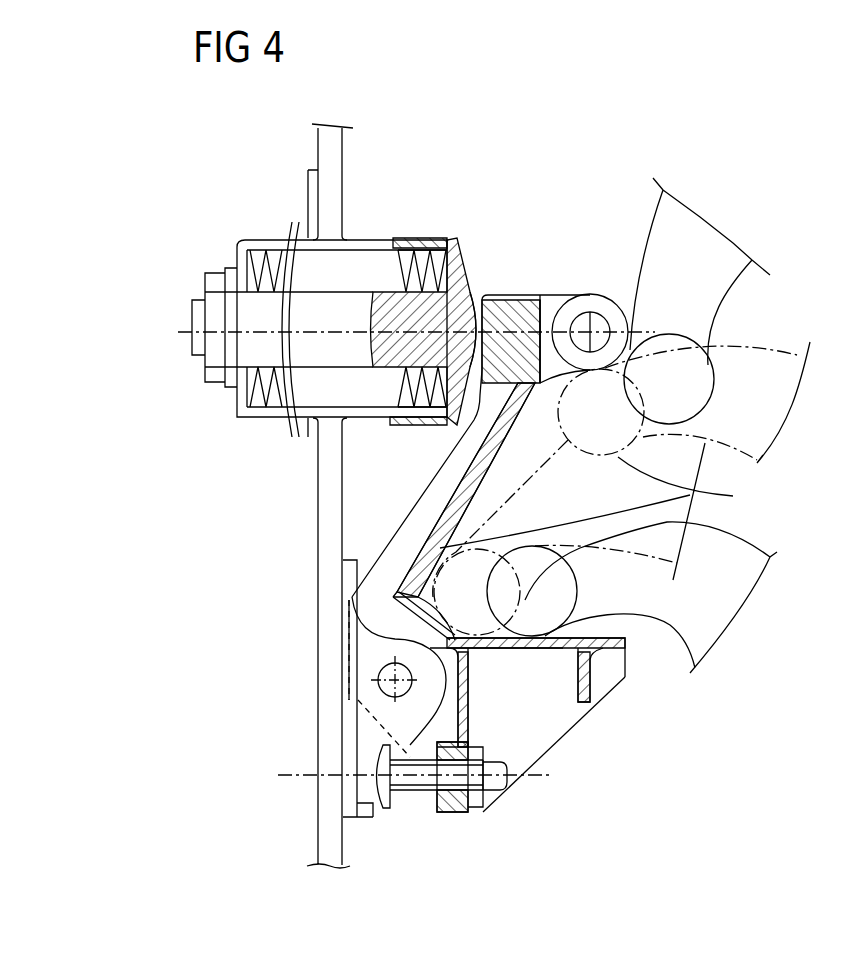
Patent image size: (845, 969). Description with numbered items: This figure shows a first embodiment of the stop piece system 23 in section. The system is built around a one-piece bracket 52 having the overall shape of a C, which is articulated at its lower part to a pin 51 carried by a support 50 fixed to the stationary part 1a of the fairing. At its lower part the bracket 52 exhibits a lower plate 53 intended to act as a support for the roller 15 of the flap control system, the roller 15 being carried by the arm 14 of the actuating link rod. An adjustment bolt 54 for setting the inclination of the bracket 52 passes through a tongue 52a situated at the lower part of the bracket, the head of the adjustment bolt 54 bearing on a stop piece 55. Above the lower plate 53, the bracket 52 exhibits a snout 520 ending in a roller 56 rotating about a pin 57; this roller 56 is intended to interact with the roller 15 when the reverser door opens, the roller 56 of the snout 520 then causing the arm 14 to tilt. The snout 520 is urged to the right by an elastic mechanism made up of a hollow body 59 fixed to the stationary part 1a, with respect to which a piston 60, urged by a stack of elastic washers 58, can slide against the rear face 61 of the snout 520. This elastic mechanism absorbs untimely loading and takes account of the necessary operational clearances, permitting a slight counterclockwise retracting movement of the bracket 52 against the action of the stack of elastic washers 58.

The stationary part of the fairing 1a is at (323, 837).
The arm 14 is at (683, 608).
The roller 15 is at (687, 496).
The stop piece system 23 is at (583, 137).
The support 50 is at (393, 723).
The pin 51 is at (380, 660).
The bracket 52 is at (422, 512).
The tongue 52a is at (447, 800).
The lower plate 53 is at (563, 648).
The adjustment bolt 54 is at (390, 810).
The stop piece 55 is at (365, 818).
The roller 56 is at (555, 297).
The pin 57 is at (590, 317).
The stack of elastic washers 58 is at (403, 267).
The hollow body 59 is at (307, 238).
The piston 60 is at (482, 293).
The rear face 61 is at (482, 290).
The snout 520 is at (510, 303).